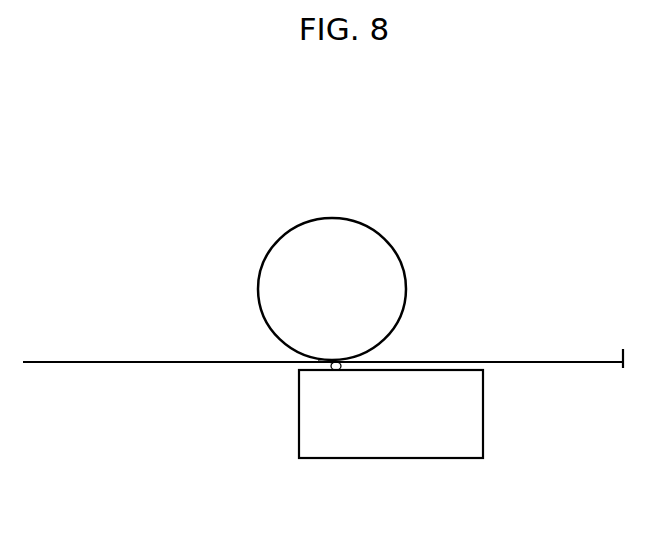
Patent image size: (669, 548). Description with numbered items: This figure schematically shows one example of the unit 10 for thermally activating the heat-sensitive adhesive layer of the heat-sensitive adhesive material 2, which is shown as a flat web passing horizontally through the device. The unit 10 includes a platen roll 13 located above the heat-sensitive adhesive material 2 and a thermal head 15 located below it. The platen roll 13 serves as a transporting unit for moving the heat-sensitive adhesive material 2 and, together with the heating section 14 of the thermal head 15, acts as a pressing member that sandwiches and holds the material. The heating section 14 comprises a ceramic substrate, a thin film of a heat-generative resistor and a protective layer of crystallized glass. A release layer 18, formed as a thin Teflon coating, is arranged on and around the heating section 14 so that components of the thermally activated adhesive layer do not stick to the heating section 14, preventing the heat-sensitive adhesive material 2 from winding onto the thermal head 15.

The heat-sensitive adhesive material 2 is at (593, 358).
The unit for thermally activating 10 is at (497, 223).
The platen roll 13 is at (353, 245).
The heating section 14 is at (335, 368).
The thermal head 15 is at (492, 436).
The release layer 18 is at (326, 363).